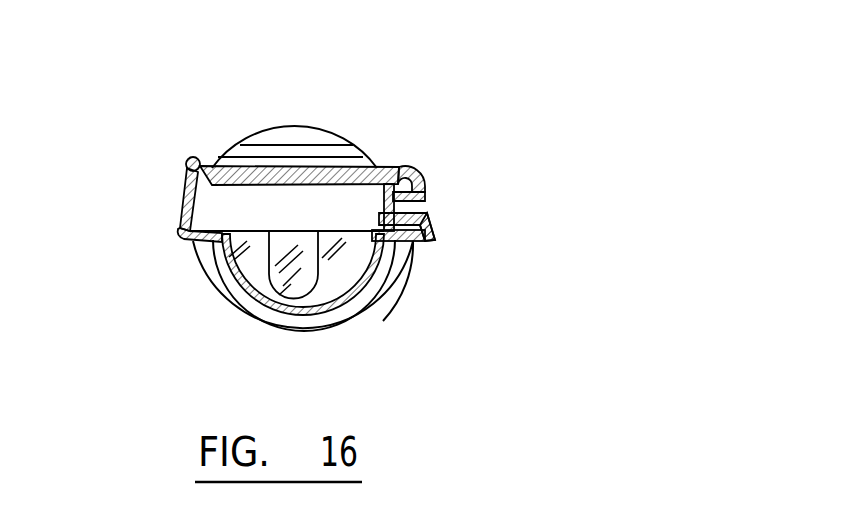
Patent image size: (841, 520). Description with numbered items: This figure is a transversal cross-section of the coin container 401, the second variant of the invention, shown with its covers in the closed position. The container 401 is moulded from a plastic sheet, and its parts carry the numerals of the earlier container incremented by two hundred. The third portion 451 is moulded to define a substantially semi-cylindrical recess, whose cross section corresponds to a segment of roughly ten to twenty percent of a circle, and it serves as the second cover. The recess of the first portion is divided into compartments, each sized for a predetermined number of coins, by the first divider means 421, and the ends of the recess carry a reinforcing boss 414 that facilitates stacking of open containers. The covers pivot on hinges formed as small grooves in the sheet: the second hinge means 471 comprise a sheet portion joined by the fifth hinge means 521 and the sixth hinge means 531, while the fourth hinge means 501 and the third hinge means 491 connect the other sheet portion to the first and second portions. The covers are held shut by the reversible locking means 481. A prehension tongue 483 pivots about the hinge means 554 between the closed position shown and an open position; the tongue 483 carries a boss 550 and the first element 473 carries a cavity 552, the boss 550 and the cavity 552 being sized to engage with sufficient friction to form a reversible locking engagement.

The container 401 is at (628, 122).
The third portion 451 is at (229, 165).
The reversible locking means 481 is at (313, 150).
The sixth hinge means 531 is at (189, 159).
The second hinge means 471 is at (166, 196).
The fifth hinge means 521 is at (177, 226).
The fourth hinge means 501 is at (379, 166).
The hinge means 554 is at (406, 172).
The prehension tongue 483 is at (426, 188).
The boss 550 is at (425, 203).
The first element 473 is at (428, 218).
The third hinge means 491 is at (435, 242).
The cavity 552 is at (390, 284).
The reinforcing boss 414 is at (283, 311).
The first divider means 421 is at (410, 346).